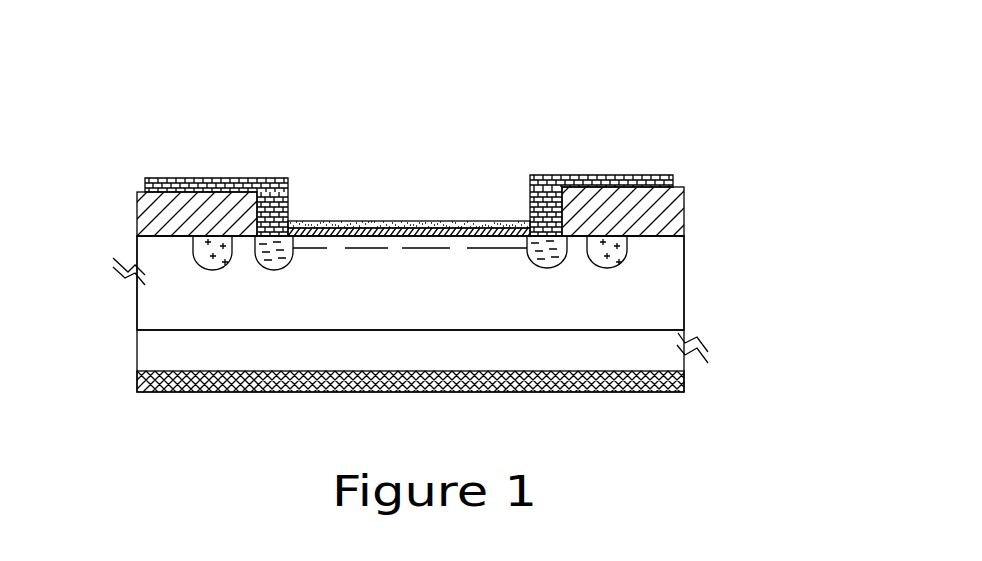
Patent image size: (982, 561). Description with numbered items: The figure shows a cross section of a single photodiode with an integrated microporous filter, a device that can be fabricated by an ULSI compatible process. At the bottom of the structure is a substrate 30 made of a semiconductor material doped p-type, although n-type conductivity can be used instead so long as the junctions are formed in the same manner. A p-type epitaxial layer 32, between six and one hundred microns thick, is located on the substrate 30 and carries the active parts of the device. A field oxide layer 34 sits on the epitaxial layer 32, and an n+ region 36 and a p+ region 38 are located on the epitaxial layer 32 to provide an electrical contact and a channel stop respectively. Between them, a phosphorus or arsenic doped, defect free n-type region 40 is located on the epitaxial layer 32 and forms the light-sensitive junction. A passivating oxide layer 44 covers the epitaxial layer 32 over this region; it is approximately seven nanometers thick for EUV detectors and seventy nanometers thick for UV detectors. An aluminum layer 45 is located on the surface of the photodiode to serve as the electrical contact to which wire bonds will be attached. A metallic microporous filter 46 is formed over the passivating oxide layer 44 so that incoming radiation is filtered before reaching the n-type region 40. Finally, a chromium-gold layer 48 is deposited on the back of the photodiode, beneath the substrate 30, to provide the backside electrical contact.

The substrate 30 is at (640, 337).
The p-type epitaxial layer 32 is at (628, 300).
The field oxide layer 34 is at (673, 175).
The n+ region 36 is at (268, 248).
The p+ region 38 is at (212, 254).
The n-type region 40 is at (358, 243).
The passivating oxide layer 44 is at (474, 232).
The aluminum layer 45 is at (553, 175).
The metallic microporous filter 46 is at (409, 225).
The chromium-gold layer 48 is at (684, 385).